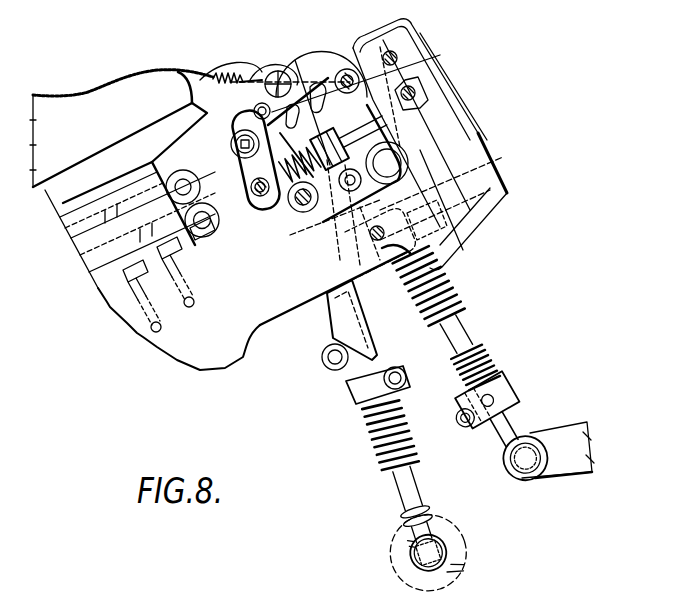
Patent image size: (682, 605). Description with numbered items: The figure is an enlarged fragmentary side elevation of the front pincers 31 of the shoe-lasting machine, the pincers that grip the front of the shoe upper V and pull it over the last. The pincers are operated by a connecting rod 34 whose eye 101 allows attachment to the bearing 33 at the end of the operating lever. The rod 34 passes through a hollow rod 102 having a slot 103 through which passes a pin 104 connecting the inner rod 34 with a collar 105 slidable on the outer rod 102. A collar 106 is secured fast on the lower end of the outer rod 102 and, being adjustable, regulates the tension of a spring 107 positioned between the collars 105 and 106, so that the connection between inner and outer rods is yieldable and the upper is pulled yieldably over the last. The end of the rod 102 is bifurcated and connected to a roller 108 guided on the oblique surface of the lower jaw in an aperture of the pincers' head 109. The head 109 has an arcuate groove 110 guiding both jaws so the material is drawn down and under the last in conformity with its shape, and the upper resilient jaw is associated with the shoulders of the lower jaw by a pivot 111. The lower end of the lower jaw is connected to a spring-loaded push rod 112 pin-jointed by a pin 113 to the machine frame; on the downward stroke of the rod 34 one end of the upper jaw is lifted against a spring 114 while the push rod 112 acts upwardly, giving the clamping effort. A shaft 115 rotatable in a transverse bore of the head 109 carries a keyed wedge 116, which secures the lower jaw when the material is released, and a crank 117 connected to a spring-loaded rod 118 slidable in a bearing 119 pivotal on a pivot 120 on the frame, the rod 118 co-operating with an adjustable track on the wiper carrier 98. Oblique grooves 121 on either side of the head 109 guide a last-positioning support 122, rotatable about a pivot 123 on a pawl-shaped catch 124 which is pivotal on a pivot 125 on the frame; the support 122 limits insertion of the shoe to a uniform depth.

The shoe upper V is at (86, 97).
The last-positioning support 122 is at (190, 84).
The front pincers 31 is at (251, 72).
The pivot 111 is at (280, 71).
The roller 108 is at (300, 75).
The pivot 123 is at (350, 78).
The pawl-shaped catch 124 is at (394, 58).
The wiper carrier 98 is at (423, 47).
The oblique grooves 121 is at (415, 80).
The pincers' head 109 is at (340, 100).
The spring-loaded rod 118 is at (340, 117).
The bearing 119 is at (340, 130).
The pivot 125 is at (480, 134).
The pivot 120 is at (455, 160).
The collar 105 is at (505, 194).
The pin 104 is at (477, 223).
The slot 103 is at (410, 250).
The spring 107 is at (433, 295).
The hollow rod 102 is at (453, 327).
The connecting rod 34 is at (515, 432).
The bearing 33 is at (584, 447).
The eye 101 is at (537, 467).
The collar 106 is at (473, 428).
The pin 113 is at (447, 548).
The push rod 112 is at (393, 483).
The spring 114 is at (377, 445).
The arcuate groove 110 is at (321, 328).
The wedge 116 is at (133, 330).
The crank 117 is at (92, 258).
The shaft 115 is at (232, 143).